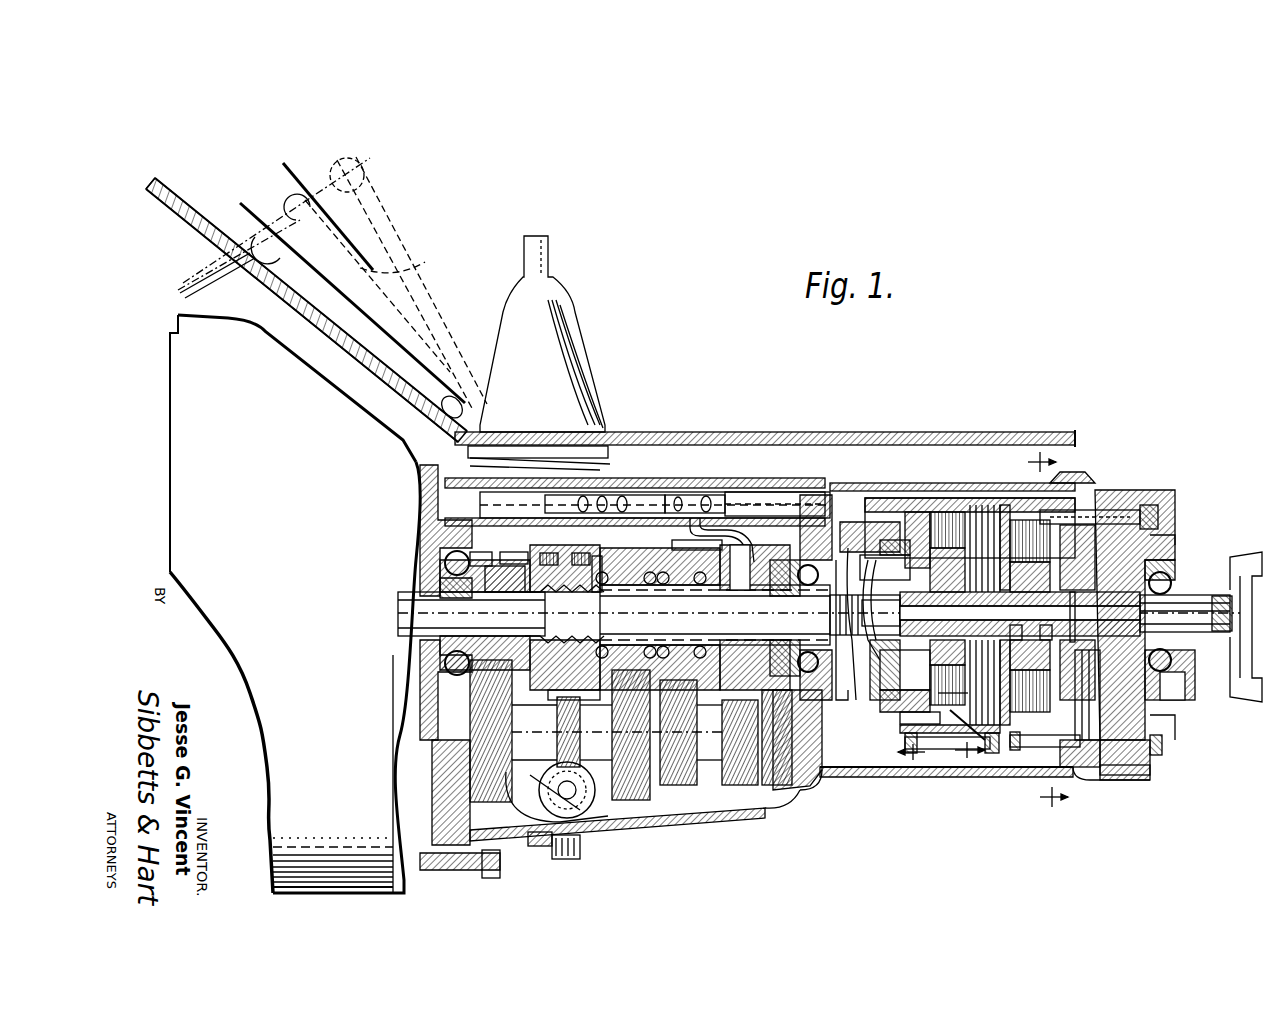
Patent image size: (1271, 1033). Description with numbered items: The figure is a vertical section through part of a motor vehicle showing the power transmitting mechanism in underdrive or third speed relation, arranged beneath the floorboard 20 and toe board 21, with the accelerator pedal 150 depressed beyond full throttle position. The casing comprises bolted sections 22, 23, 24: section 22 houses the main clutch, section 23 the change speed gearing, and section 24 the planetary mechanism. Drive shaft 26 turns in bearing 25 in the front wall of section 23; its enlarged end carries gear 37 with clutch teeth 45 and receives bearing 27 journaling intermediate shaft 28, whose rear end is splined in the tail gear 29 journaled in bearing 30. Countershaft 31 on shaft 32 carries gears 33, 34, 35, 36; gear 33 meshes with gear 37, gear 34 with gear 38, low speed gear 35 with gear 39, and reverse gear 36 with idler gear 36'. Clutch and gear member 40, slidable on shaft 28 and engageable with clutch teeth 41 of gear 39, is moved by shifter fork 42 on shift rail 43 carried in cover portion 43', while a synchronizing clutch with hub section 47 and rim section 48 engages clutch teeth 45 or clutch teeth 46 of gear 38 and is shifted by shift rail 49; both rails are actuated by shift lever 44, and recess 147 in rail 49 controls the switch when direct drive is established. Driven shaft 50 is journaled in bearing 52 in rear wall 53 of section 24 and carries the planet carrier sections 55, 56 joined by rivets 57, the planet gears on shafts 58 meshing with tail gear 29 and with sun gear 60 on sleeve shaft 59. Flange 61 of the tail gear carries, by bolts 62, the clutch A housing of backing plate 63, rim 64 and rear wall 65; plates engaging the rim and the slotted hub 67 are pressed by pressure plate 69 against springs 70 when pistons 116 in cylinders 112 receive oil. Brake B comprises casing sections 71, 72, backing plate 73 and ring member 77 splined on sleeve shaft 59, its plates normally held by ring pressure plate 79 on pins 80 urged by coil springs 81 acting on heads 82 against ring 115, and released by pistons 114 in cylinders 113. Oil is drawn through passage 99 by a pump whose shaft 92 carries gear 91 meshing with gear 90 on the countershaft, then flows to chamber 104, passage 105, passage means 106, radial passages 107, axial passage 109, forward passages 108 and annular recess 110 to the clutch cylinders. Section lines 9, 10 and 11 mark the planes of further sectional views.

The section line 9 is at (911, 755).
The section line 10 is at (970, 754).
The section line 11 is at (1046, 630).
The floorboard 20 is at (856, 432).
The toe board 21 is at (354, 348).
The casing section 22 is at (402, 434).
The casing section 23 is at (794, 792).
The casing section 24 is at (984, 778).
The bearing 25 is at (443, 565).
The drive shaft 26 is at (404, 610).
The bearing 27 is at (492, 571).
The intermediate driving shaft 28 is at (642, 603).
The tail gear 29 is at (863, 700).
The bearing 30 is at (838, 702).
The countershaft 31 is at (719, 788).
The shaft 32 is at (812, 800).
The gear 33 is at (498, 808).
The gear 34 is at (637, 805).
The low speed gear 35 is at (679, 790).
The reverse gear 36 is at (768, 764).
The idler gear 36' is at (802, 597).
The gear 37 is at (477, 560).
The gear 38 is at (626, 568).
The gear 39 is at (680, 546).
The clutch and gear member 40 is at (760, 568).
The clutch teeth 41 is at (706, 570).
The shifter fork 42 is at (730, 530).
The shift rail 43 is at (695, 484).
The cover portion 43' is at (775, 485).
The shift lever 44 is at (551, 272).
The clutch teeth 45 is at (512, 556).
The clutch teeth 46 is at (596, 558).
The hub section 47 is at (522, 606).
The rim section 48 is at (598, 538).
The shift rail 49 is at (636, 496).
The driven shaft 50 is at (1183, 596).
The bearing 52 is at (1152, 582).
The rear wall 53 is at (1144, 506).
The carrier section 55 is at (868, 534).
The carrier section 56 is at (898, 702).
The rivets 57 is at (886, 606).
The shafts 58 is at (885, 541).
The tubular shaft 59 is at (903, 684).
The sun gear 60 is at (901, 540).
The flange 61 is at (909, 496).
The bolts 62 is at (935, 749).
The backing plate 63 is at (932, 506).
The rim 64 is at (955, 760).
The rear wall 65 is at (992, 752).
The slotted hub 67 is at (897, 692).
The pressure plate 69 is at (958, 505).
The springs 70 is at (948, 495).
The casing section 71 is at (1064, 482).
The casing section 72 is at (1105, 772).
The backing plate 73 is at (1101, 510).
The ring member 77 is at (1090, 676).
The ring pressure plate 79 is at (1020, 504).
The pins 80 is at (1016, 752).
The coil springs 81 is at (1088, 760).
The heads 82 is at (1116, 768).
The gear 90 is at (584, 732).
The gear 91 is at (584, 800).
The pump shaft 92 is at (572, 800).
The passage 99 is at (536, 847).
The annular chamber 104 is at (1152, 536).
The passage 105 is at (1152, 560).
The passage means 106 is at (1146, 626).
The radial passages 107 is at (1070, 617).
The radial passages 108 is at (990, 604).
The axial passage 109 is at (1042, 623).
The annular recess 110 is at (1012, 618).
The cylinders 112 is at (1003, 502).
The cylinders 113 is at (1142, 748).
The pistons 114 is at (1163, 742).
The ring 115 is at (1118, 512).
The pistons 116 is at (981, 504).
The recess 147 is at (706, 497).
The accelerator pedal 150 is at (376, 296).
The clutch A is at (966, 694).
The brake B is at (962, 711).